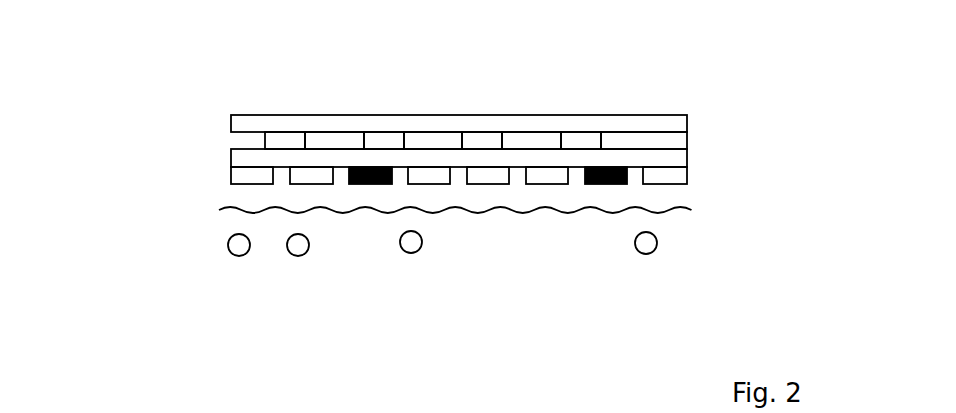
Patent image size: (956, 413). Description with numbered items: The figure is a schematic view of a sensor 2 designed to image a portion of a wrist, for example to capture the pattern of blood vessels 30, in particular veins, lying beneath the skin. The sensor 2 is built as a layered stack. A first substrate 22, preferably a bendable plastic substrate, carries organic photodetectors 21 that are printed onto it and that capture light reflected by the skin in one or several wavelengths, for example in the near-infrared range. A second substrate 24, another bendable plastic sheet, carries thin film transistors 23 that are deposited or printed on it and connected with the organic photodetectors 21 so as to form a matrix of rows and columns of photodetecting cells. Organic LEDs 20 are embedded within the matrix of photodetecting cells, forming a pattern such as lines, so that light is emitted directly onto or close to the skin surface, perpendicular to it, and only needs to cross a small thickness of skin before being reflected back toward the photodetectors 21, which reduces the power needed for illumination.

The sensor 2 is at (152, 288).
The organic LEDs 20 is at (610, 172).
The organic photodetectors 21 is at (677, 177).
The substrate 22 is at (677, 154).
The thin film transistors 23 is at (590, 130).
The second substrate 24 is at (473, 127).
The blood vessels 30 is at (239, 245).